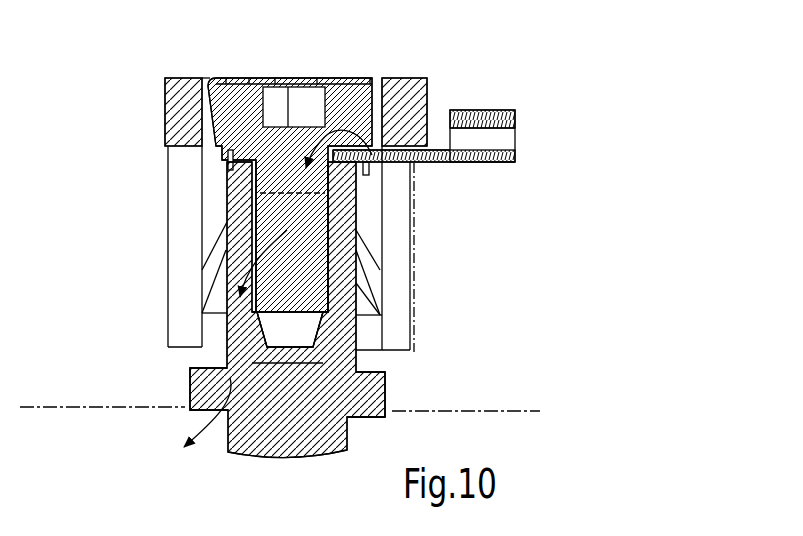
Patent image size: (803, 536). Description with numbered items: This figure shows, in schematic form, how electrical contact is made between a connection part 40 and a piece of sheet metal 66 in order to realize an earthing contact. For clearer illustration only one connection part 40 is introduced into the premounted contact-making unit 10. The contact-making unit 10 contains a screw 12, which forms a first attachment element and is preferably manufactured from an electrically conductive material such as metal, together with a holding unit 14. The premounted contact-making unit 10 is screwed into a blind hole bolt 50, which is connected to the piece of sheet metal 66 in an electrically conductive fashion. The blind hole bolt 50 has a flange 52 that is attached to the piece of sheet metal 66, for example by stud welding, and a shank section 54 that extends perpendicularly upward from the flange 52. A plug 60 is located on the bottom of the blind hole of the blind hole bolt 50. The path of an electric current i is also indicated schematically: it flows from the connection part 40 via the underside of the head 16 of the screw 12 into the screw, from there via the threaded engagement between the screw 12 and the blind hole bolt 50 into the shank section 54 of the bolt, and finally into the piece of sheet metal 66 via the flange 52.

The contact-making unit 10 is at (423, 74).
The screw 12 is at (253, 73).
The holding unit 14 is at (187, 97).
The head 16 is at (232, 123).
The connection part 40 is at (518, 101).
The blind hole bolt 50 is at (226, 218).
The flange 52 is at (381, 391).
The shank section 54 is at (332, 275).
The plug 60 is at (263, 337).
The piece of sheet metal 66 is at (508, 410).
The electric current i is at (338, 90).